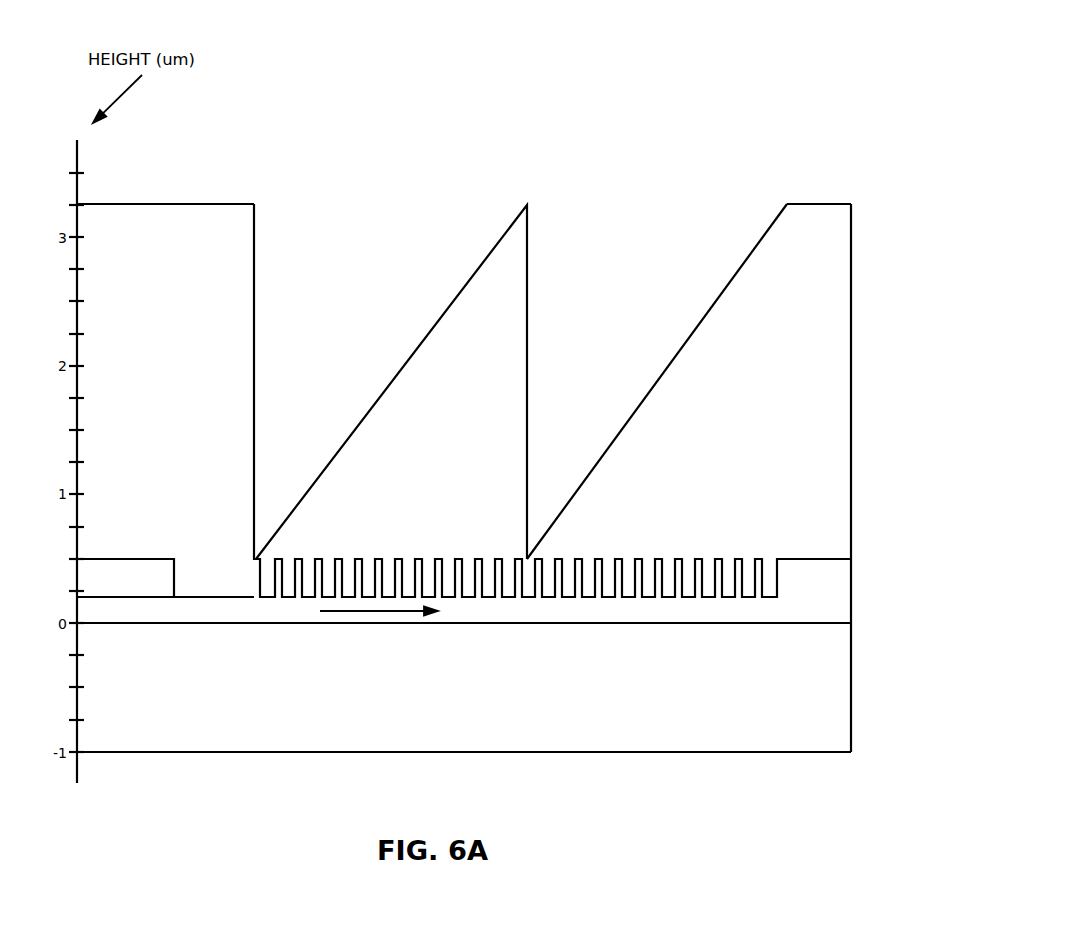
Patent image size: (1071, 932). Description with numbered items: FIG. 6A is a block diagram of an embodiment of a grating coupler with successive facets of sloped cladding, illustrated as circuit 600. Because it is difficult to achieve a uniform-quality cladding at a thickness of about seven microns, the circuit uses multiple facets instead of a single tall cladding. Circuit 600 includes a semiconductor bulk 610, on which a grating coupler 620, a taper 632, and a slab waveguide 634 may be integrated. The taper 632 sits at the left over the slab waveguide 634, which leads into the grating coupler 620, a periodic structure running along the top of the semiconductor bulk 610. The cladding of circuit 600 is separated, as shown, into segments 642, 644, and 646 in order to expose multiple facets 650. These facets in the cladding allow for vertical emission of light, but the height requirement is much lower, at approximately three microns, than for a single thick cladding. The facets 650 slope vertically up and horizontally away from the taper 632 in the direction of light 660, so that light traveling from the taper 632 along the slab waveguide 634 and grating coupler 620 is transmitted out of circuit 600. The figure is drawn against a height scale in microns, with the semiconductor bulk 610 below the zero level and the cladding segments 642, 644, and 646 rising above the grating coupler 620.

The circuit 600 is at (754, 12).
The semiconductor bulk 610 is at (464, 478).
The grating coupler 620 is at (478, 542).
The taper 632 is at (141, 545).
The slab waveguide 634 is at (225, 584).
The cladding segment 642 is at (149, 242).
The cladding segment 644 is at (490, 289).
The cladding segment 646 is at (782, 289).
The facets 650 is at (660, 354).
The direction of light 660 is at (300, 611).